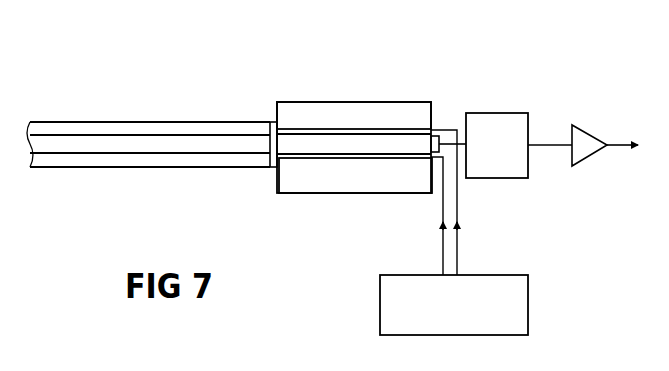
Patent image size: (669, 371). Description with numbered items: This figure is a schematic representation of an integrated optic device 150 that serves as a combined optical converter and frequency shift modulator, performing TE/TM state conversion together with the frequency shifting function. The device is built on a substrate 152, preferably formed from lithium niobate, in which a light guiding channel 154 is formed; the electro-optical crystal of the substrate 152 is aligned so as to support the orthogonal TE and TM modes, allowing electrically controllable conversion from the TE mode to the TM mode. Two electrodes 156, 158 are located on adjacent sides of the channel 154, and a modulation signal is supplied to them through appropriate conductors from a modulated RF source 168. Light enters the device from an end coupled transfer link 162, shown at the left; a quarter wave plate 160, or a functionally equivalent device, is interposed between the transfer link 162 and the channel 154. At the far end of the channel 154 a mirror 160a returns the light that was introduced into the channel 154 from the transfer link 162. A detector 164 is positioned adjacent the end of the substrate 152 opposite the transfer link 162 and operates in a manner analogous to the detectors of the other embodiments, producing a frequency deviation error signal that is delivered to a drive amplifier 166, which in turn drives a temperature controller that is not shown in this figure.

The integrated optic device 150 is at (499, 66).
The substrate 152 is at (315, 102).
The light guiding channel 154 is at (305, 143).
The electrode 156 is at (392, 129).
The electrode 158 is at (372, 158).
The quarter wave plate 160 is at (166, 58).
The mirror 160a is at (437, 136).
The end coupled transfer link 162 is at (157, 121).
The detector 164 is at (512, 155).
The drive amplifier 166 is at (586, 160).
The modulated RF source 168 is at (380, 300).